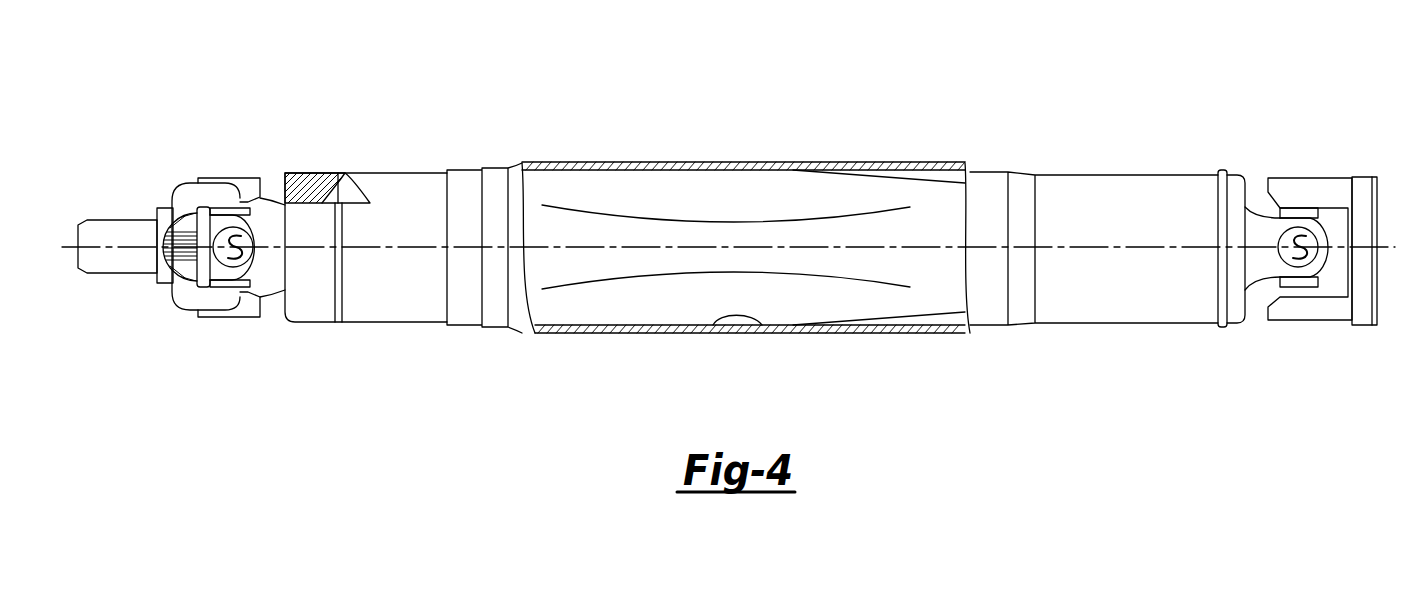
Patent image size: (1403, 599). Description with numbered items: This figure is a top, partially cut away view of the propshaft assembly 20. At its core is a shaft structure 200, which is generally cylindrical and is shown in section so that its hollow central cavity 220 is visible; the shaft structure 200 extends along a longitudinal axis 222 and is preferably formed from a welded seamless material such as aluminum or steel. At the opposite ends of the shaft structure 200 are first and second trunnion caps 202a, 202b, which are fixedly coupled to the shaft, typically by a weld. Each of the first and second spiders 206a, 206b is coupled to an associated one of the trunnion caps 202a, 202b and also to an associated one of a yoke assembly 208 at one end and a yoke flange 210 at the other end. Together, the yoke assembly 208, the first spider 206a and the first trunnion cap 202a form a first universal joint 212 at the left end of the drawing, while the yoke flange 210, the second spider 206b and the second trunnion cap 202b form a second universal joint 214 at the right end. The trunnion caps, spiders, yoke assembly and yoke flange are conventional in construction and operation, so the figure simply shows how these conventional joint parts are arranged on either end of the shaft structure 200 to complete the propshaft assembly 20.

The propshaft assembly 20 is at (593, 98).
The shaft structure 200 is at (716, 280).
The first trunnion cap 202a is at (389, 215).
The second trunnion cap 202b is at (1233, 183).
The first spider 206a is at (240, 287).
The second spider 206b is at (1285, 207).
The yoke assembly 208 is at (105, 227).
The yoke flange 210 is at (1305, 307).
The first universal joint 212 is at (221, 247).
The second universal joint 214 is at (1265, 265).
The hollow central cavity 220 is at (763, 330).
The longitudinal axis 222 is at (353, 245).